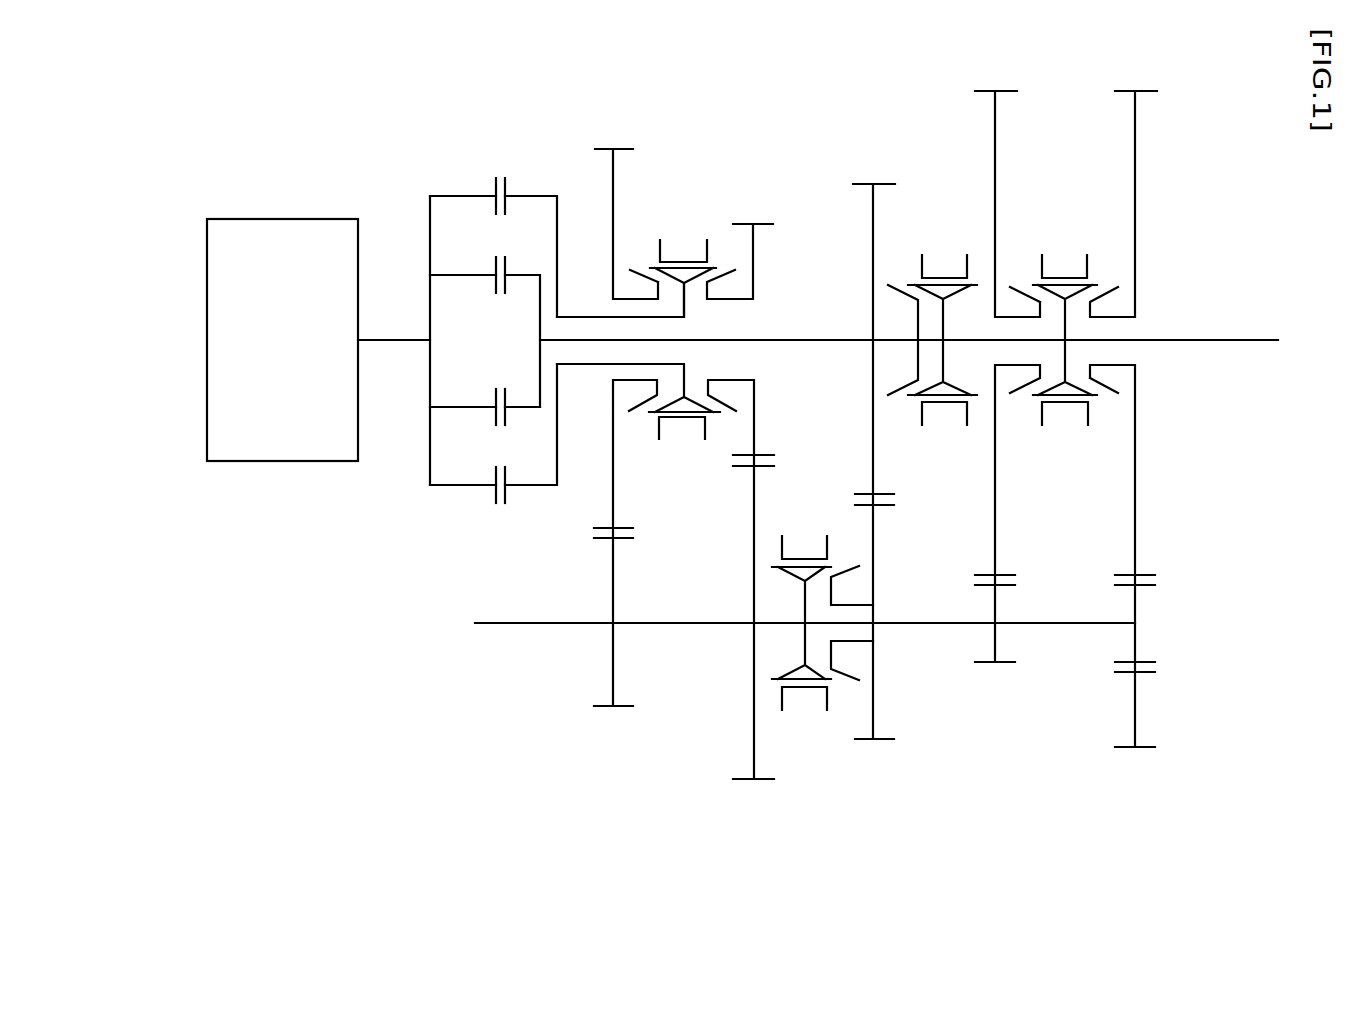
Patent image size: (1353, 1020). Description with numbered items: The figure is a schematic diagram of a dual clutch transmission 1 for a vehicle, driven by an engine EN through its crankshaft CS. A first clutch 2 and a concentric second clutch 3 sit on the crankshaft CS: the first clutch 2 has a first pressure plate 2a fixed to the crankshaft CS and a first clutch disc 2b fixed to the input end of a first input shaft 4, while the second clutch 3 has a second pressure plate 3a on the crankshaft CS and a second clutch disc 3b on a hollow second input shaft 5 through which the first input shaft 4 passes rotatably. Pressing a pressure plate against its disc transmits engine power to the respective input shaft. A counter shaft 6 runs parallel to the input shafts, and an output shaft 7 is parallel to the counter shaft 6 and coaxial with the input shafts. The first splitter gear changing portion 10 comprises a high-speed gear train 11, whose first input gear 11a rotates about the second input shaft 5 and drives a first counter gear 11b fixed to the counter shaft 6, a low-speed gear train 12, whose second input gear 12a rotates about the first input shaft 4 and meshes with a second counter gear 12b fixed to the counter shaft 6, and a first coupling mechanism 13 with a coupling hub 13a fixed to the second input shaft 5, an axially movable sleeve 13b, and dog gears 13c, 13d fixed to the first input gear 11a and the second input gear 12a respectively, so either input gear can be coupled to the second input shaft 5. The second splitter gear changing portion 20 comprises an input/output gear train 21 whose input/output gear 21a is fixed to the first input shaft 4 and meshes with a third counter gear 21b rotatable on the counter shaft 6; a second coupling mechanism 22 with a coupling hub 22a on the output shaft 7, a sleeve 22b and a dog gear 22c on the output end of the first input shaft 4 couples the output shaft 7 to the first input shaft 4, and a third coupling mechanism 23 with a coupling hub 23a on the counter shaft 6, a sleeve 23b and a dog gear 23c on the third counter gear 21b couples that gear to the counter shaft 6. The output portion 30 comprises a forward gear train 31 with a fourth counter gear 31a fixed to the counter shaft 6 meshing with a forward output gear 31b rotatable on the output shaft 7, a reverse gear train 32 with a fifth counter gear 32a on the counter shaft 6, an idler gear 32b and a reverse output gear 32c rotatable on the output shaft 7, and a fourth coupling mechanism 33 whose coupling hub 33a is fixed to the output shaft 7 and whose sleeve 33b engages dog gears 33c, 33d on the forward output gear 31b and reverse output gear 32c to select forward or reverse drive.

The dual clutch transmission 1 is at (1225, 157).
The engine EN is at (282, 340).
The crankshaft CS is at (392, 337).
The first clutch 2 is at (485, 341).
The first pressure plate 2a is at (493, 400).
The first clutch disc 2b is at (510, 400).
The second clutch 3 is at (493, 363).
The second pressure plate 3a is at (493, 497).
The second clutch disc 3b is at (508, 497).
The first input shaft 4 is at (813, 338).
The second input shaft 5 is at (590, 315).
The counter shaft 6 is at (685, 621).
The output shaft 7 is at (1188, 338).
The first splitter gear changing portion 10 is at (683, 457).
The high-speed gear train 11 is at (605, 193).
The first input gear 11a is at (630, 147).
The first counter gear 11b is at (620, 708).
The low-speed gear train 12 is at (761, 203).
The second input gear 12a is at (770, 223).
The second counter gear 12b is at (764, 781).
The first coupling mechanism 13 is at (682, 225).
The coupling hub 13a is at (720, 265).
The sleeve 13b is at (678, 260).
The dog gear 13c is at (643, 267).
The dog gear 13d is at (724, 415).
The second splitter gear changing portion 20 is at (874, 425).
The input/output gear train 21 is at (895, 462).
The input/output gear 21a is at (887, 182).
The third counter gear 21b is at (882, 741).
The second coupling mechanism 22 is at (942, 288).
The coupling hub 22a is at (972, 283).
The sleeve 22b is at (947, 277).
The dog gear 22c is at (898, 285).
The third coupling mechanism 23 is at (812, 589).
The coupling hub 23a is at (786, 579).
The sleeve 23b is at (815, 555).
The dog gear 23c is at (843, 567).
The output portion 30 is at (1068, 422).
The forward gear train 31 is at (999, 379).
The fourth counter gear 31a is at (1010, 667).
The forward output gear 31b is at (1007, 88).
The reverse gear train 32 is at (1115, 424).
The fifth counter gear 32a is at (1132, 648).
The idler gear 32b is at (1142, 753).
The reverse output gear 32c is at (1148, 88).
The fourth coupling mechanism 33 is at (1062, 311).
The coupling hub 33a is at (1098, 283).
The sleeve 33b is at (1073, 280).
The dog gear 33c is at (1010, 283).
The dog gear 33d is at (1110, 397).